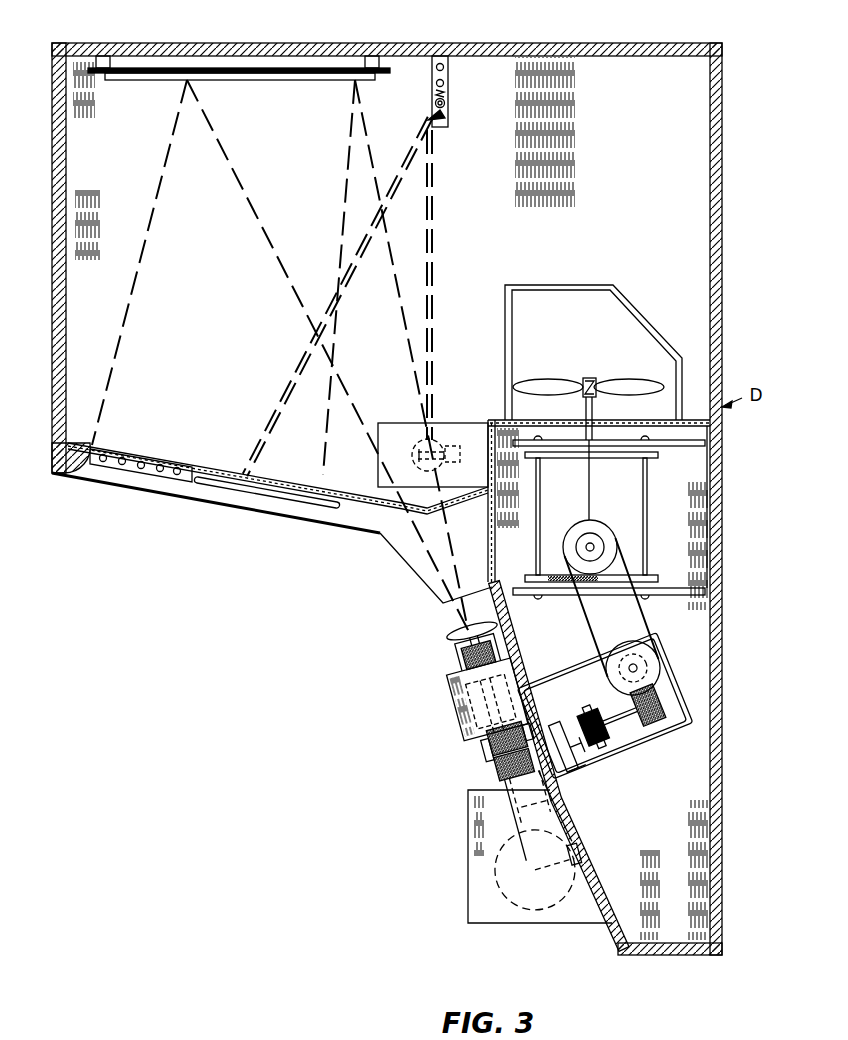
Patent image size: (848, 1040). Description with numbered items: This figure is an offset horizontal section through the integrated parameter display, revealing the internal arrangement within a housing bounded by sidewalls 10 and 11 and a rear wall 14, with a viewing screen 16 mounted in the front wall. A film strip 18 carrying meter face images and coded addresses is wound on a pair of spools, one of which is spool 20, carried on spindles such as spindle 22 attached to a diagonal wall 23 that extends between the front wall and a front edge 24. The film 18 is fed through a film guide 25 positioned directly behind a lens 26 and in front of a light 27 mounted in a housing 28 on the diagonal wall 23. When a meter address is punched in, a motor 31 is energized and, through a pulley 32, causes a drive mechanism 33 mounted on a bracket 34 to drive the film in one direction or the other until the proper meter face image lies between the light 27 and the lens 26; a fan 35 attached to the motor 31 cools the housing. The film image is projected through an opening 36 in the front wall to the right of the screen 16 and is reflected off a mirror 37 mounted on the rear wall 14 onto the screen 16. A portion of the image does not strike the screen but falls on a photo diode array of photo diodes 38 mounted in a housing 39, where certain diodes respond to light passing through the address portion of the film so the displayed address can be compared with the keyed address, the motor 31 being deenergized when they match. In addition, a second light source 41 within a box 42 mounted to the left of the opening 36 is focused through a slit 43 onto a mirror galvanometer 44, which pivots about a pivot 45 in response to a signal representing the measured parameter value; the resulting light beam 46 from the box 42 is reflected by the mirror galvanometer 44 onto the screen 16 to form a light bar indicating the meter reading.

The sidewall 10 is at (52, 347).
The sidewall 11 is at (722, 263).
The rear wall 14 is at (508, 44).
The viewing screen 16 is at (235, 493).
The film strip 18 is at (460, 654).
The spool 20 is at (492, 770).
The spindle 22 is at (488, 744).
The diagonal wall 23 is at (616, 948).
The front edge 24 is at (714, 956).
The film guide 25 is at (458, 670).
The lens 26 is at (452, 630).
The light 27 is at (498, 915).
The housing 28 is at (468, 857).
The motor 31 is at (650, 494).
The pulley 32 is at (596, 622).
The drive mechanism 33 is at (632, 718).
The bracket 34 is at (684, 730).
The fan 35 is at (570, 382).
The opening 36 is at (407, 505).
The mirror 37 is at (270, 68).
The photo diodes 38 is at (160, 478).
The housing 39 is at (185, 470).
The second light source 41 is at (448, 463).
The box 42 is at (458, 424).
The slit 43 is at (422, 440).
The mirror galvanometer 44 is at (450, 96).
The pivot 45 is at (446, 126).
The light beam 46 is at (340, 300).